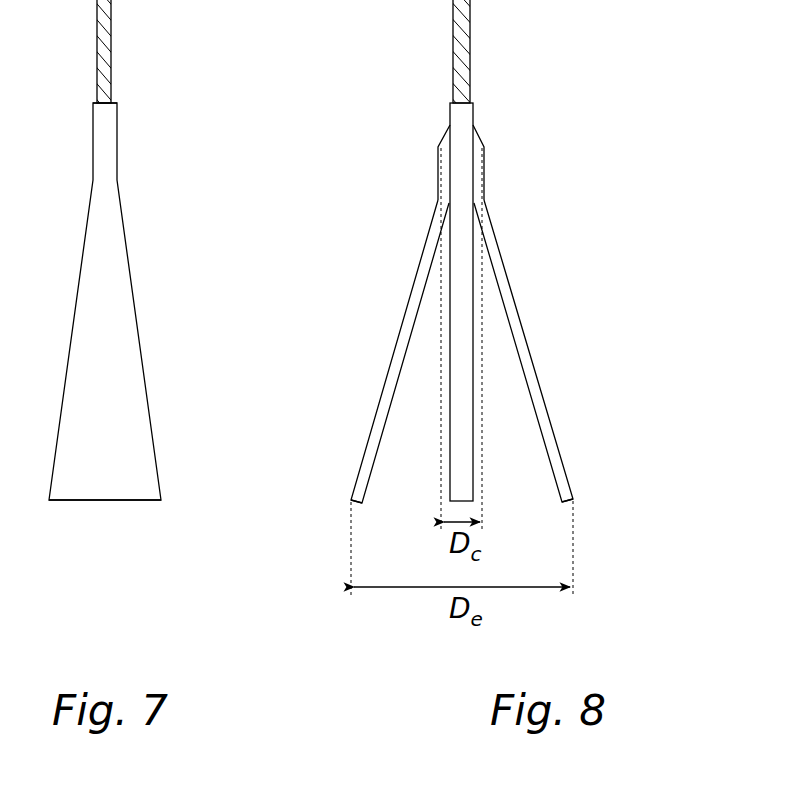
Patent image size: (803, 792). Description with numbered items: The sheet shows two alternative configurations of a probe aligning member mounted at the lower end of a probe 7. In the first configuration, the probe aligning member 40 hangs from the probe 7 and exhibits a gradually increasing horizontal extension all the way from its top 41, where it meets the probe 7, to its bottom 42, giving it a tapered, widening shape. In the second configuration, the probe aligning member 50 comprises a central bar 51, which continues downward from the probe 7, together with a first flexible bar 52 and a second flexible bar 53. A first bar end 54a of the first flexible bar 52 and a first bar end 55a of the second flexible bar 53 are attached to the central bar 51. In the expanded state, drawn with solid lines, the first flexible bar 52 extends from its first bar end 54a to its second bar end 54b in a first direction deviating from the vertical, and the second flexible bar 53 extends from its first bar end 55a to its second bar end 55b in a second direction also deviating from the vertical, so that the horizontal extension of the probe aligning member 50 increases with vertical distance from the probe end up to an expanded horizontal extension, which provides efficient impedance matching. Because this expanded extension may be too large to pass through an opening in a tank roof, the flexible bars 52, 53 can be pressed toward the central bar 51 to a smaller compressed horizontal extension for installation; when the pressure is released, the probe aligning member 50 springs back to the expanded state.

In FIG. 7, the guide wire 7 is at (110, 0).
In FIG. 8, the guide wire 7 is at (463, 0).
In FIG. 7, the probe aligning member 40 is at (134, 302).
In FIG. 7, the top 41 is at (99, 102).
In FIG. 7, the bottom 42 is at (123, 501).
In FIG. 8, the probe aligning member 50 is at (477, 303).
In FIG. 8, the central bar 51 is at (462, 285).
In FIG. 8, the first flexible bar 52 is at (382, 383).
In FIG. 8, the second flexible bar 53 is at (551, 422).
In FIG. 8, the first bar end 54a is at (400, 157).
In FIG. 8, the second bar end 54b is at (348, 485).
In FIG. 8, the first bar end 55a is at (515, 154).
In FIG. 8, the second bar end 55b is at (588, 487).